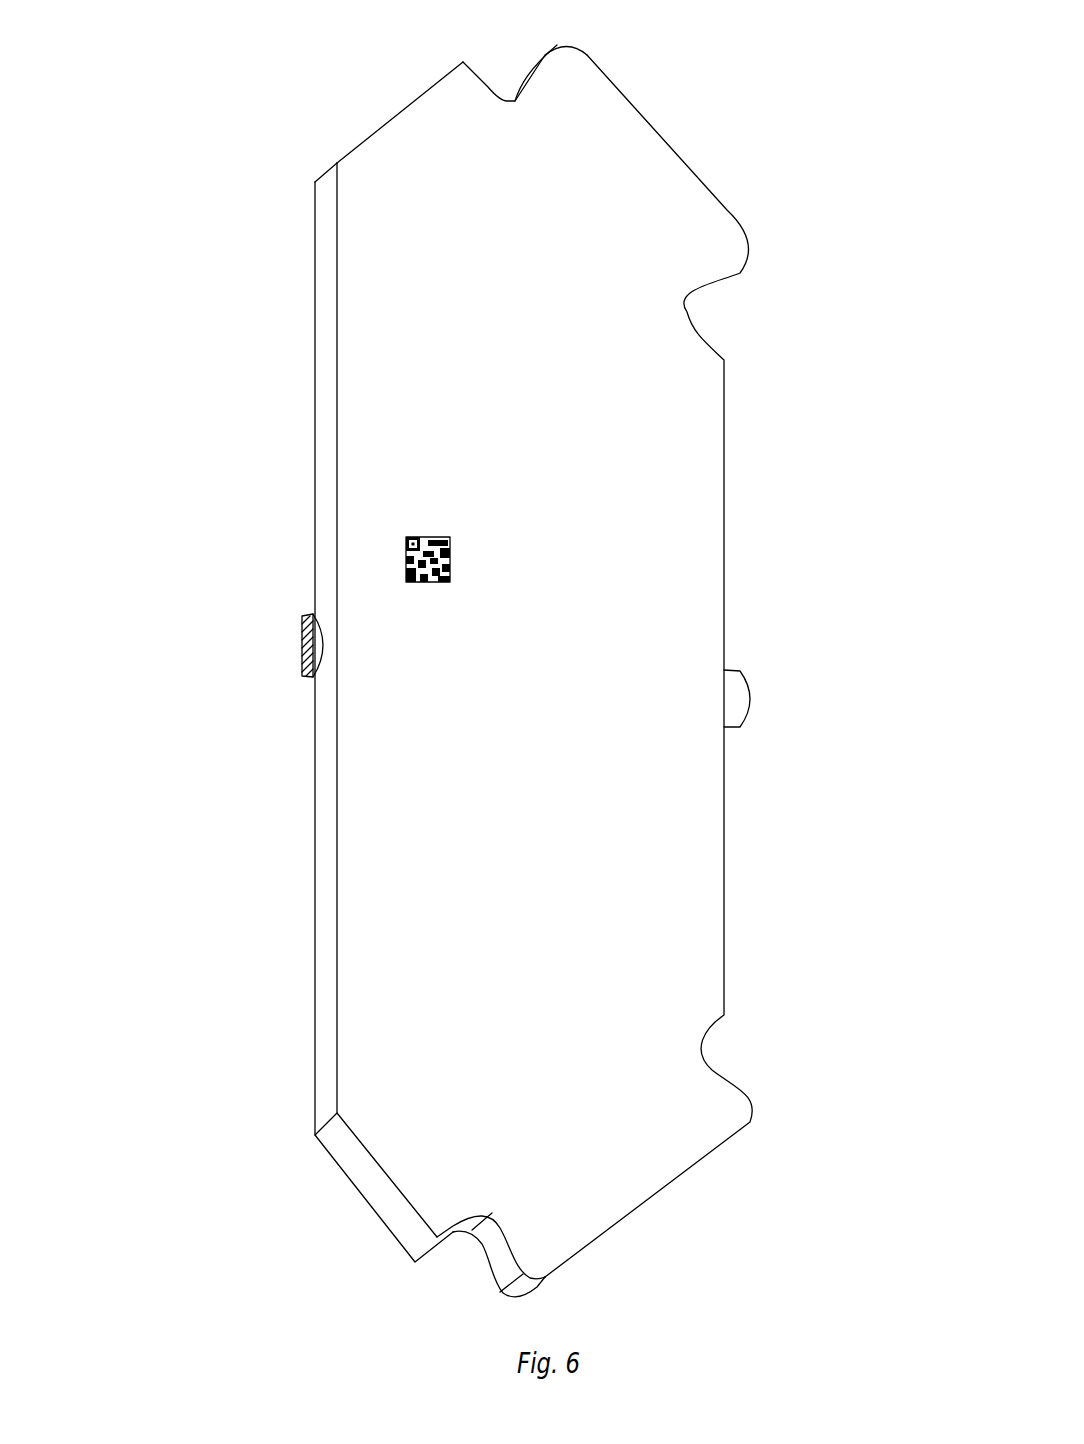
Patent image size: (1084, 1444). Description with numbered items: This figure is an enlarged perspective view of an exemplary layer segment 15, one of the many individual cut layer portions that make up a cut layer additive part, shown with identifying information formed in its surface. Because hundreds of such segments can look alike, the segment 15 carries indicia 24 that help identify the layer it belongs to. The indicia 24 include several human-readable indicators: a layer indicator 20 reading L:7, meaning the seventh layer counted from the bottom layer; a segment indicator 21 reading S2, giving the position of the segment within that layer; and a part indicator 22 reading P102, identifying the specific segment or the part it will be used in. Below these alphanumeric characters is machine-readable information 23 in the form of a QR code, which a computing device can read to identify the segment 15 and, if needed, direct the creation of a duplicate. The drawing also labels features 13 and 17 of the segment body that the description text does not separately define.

The mounting projection 13 is at (320, 643).
The layer segment 15 is at (442, 304).
The cutting edge 17 is at (665, 140).
The layer indicator 20 is at (407, 482).
The segment indicator 21 is at (457, 482).
The part indicator 22 is at (403, 523).
The machine-readable information 23 is at (403, 563).
The indicia 24 is at (523, 442).